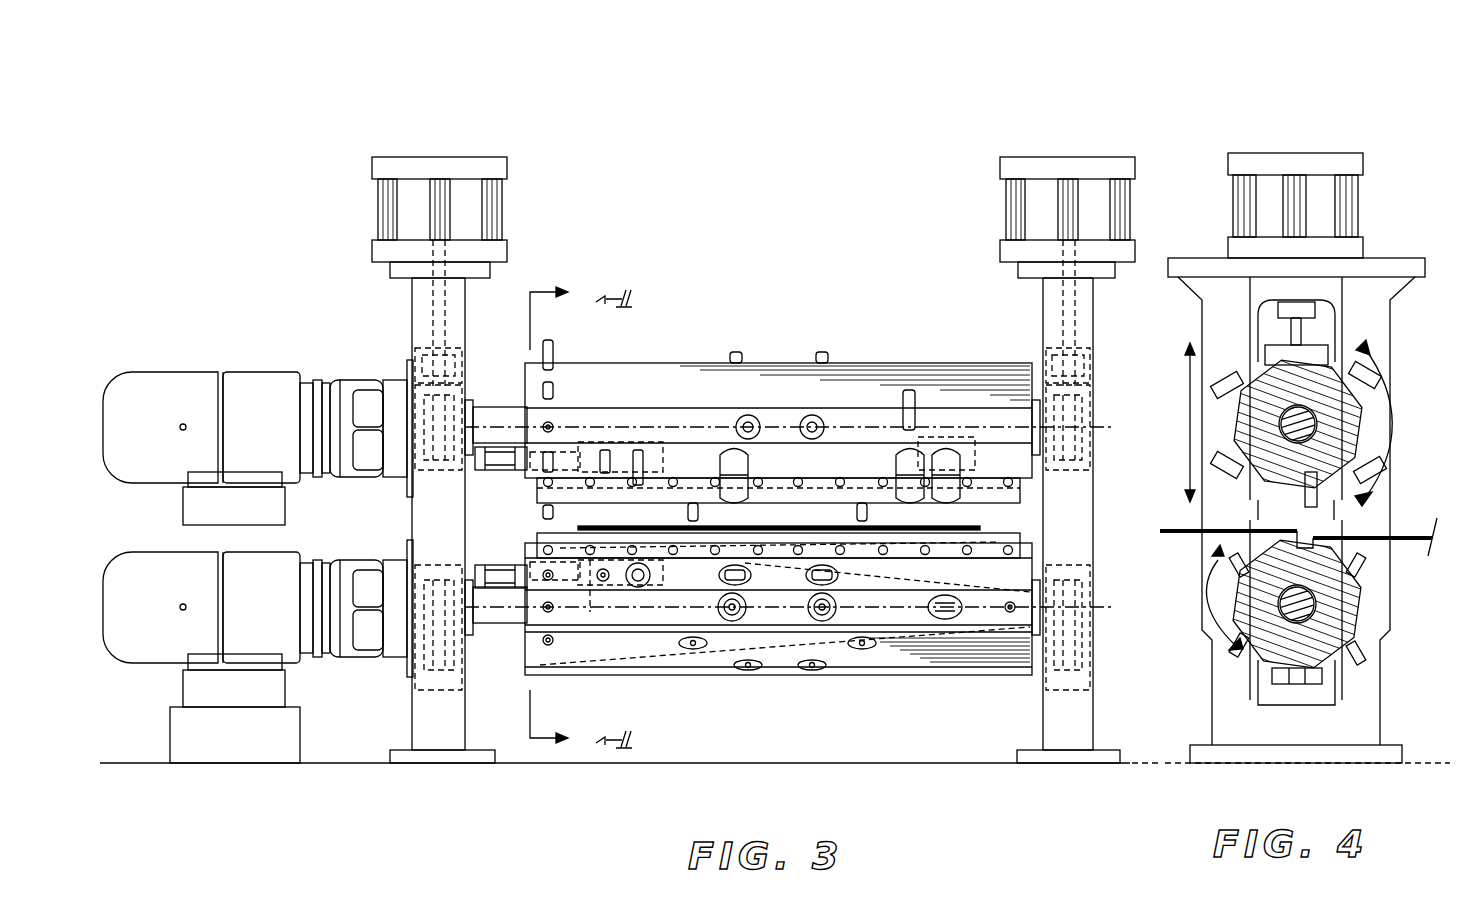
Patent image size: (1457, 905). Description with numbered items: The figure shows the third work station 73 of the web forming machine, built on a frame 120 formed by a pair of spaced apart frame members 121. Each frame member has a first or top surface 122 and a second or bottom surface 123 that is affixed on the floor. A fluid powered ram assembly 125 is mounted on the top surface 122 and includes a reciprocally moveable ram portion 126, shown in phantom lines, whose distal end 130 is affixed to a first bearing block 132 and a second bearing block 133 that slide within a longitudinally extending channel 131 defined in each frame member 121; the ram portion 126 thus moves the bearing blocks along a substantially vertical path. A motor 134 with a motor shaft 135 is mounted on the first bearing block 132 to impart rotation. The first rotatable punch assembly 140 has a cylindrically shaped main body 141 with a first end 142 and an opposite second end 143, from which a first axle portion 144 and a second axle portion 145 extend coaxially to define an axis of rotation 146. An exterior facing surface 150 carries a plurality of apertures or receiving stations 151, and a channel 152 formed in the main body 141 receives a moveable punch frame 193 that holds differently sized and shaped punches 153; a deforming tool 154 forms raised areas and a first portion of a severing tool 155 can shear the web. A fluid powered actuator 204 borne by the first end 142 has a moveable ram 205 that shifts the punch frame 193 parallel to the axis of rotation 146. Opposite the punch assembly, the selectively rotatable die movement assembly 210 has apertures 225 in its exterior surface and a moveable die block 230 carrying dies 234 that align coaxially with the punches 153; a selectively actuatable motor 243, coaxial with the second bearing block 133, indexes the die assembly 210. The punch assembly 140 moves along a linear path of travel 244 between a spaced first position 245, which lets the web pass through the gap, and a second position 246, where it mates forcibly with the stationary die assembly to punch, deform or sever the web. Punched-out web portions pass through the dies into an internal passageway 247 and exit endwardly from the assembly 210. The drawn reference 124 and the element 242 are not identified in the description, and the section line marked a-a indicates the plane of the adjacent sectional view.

In FIG. 3, the third work station 73 is at (801, 168).
In FIG. 4, the third work station 73 is at (1352, 106).
In FIG. 3, the frame 120 is at (326, 248).
In FIG. 4, the frame 120 is at (1436, 266).
In FIG. 3, the frame members 121 is at (462, 318).
In FIG. 4, the frame members 121 is at (1382, 345).
In FIG. 3, the first or top surface 122 is at (395, 272).
In FIG. 4, the first or top surface 122 is at (1382, 263).
In FIG. 3, the second or bottom surface 123 is at (435, 765).
In FIG. 4, the second or bottom surface 123 is at (1352, 765).
In FIG. 3, the actuator rod 124 is at (437, 262).
In FIG. 3, the fluid powered ram assembly 125 is at (502, 200).
In FIG. 4, the fluid powered ram assembly 125 is at (1362, 200).
In FIG. 3, the ram portion 126 is at (455, 298).
In FIG. 4, the ram portion 126 is at (1350, 322).
In FIG. 3, the distal end 130 is at (425, 365).
In FIG. 3, the channel 131 is at (420, 338).
In FIG. 4, the channel 131 is at (1268, 303).
In FIG. 3, the first bearing block 132 is at (440, 470).
In FIG. 3, the second bearing block 133 is at (415, 680).
In FIG. 3, the motor 134 is at (135, 440).
In FIG. 3, the motor shaft 135 is at (412, 405).
In FIG. 3, the first rotatable punch assembly 140 is at (719, 315).
In FIG. 4, the first rotatable punch assembly 140 is at (1372, 350).
In FIG. 3, the main body 141 is at (690, 378).
In FIG. 3, the first end 142 is at (530, 345).
In FIG. 3, the second end 143 is at (1035, 470).
In FIG. 3, the first axle portion 144 is at (512, 410).
In FIG. 3, the second axle portion 145 is at (1090, 455).
In FIG. 3, the axis of rotation 146 is at (684, 427).
In FIG. 3, the exterior facing surface 150 is at (838, 362).
In FIG. 3, the apertures or receiving stations 151 is at (557, 365).
In FIG. 3, the channel 152 is at (645, 470).
In FIG. 3, the punches 153 is at (816, 352).
In FIG. 4, the punches 153 is at (1228, 385).
In FIG. 3, the deforming tool 154 is at (920, 430).
In FIG. 3, the severing tool 155 is at (990, 490).
In FIG. 4, the severing tool 155 is at (1314, 505).
In FIG. 3, the moveable punch frame 193 is at (590, 470).
In FIG. 3, the fluid powered actuator 204 is at (497, 465).
In FIG. 3, the moveable ram 205 is at (497, 630).
In FIG. 3, the selectively rotatable die movement assembly 210 is at (888, 688).
In FIG. 4, the selectively rotatable die movement assembly 210 is at (1340, 607).
In FIG. 3, the apertures 225 is at (825, 622).
In FIG. 3, the moveable die block 230 is at (585, 580).
In FIG. 3, the dies 234 is at (715, 578).
In FIG. 4, the dies 234 is at (1327, 552).
In FIG. 3, the web 242 is at (1005, 530).
In FIG. 3, the selectively actuatable motor 243 is at (133, 625).
In FIG. 4, the linear path of travel 244 is at (1189, 418).
In FIG. 4, the first position 245 is at (1188, 345).
In FIG. 4, the second position 246 is at (1190, 486).
In FIG. 3, the internal passageway 247 is at (900, 625).